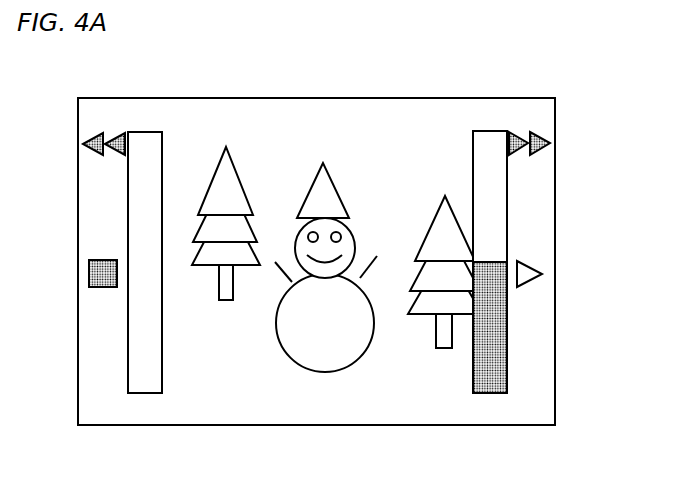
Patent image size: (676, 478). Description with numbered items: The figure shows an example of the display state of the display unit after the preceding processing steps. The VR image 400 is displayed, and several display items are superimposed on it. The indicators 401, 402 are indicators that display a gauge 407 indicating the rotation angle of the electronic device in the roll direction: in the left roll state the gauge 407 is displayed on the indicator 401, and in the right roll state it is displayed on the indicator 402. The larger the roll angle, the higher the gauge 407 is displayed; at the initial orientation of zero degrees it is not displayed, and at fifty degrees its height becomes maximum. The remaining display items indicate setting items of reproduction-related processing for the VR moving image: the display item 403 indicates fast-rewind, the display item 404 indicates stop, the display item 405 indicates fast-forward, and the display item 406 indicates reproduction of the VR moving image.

The VR image 400 is at (320, 115).
The indicator 401 is at (145, 131).
The indicator 402 is at (487, 131).
The display item 403 is at (100, 140).
The display item 404 is at (100, 260).
The display item 405 is at (540, 150).
The display item 406 is at (540, 280).
The gauge 407 is at (490, 327).